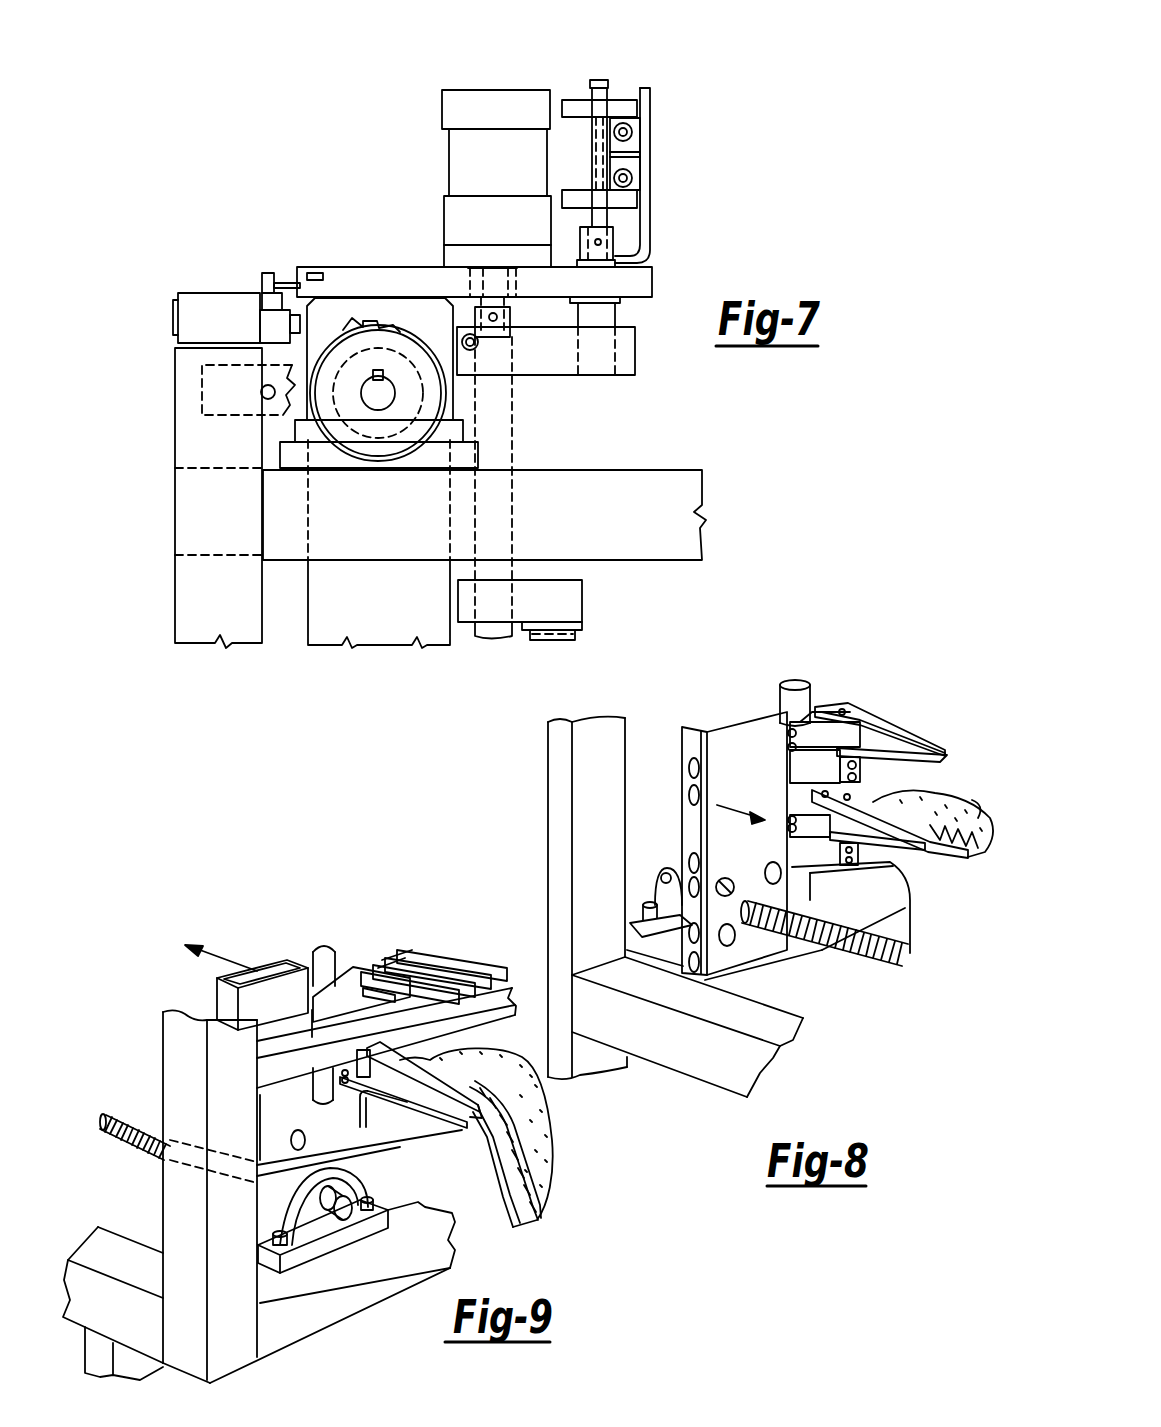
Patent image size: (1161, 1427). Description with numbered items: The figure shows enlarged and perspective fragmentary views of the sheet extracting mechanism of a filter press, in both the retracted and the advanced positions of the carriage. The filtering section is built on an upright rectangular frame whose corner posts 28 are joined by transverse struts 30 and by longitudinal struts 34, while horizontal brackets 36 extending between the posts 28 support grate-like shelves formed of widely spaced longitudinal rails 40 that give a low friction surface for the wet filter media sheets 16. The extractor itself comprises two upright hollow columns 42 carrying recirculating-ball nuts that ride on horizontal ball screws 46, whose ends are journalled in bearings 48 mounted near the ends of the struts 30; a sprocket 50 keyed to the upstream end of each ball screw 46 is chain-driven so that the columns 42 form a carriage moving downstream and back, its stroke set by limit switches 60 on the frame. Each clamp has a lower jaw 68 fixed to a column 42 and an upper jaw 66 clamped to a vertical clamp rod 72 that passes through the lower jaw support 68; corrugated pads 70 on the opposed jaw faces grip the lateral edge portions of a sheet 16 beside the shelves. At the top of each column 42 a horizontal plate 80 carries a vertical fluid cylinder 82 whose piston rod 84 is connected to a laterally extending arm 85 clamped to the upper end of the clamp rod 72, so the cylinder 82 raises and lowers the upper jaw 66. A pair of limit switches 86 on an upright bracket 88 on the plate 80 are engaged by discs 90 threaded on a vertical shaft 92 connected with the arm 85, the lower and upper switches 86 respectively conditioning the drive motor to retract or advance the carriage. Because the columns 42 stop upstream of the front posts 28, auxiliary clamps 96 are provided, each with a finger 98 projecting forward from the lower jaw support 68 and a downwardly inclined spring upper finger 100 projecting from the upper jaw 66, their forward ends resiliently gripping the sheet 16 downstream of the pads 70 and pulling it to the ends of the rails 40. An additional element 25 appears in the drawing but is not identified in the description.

In FIG. 8, the filter media sheet 16 is at (950, 850).
In FIG. 8, the cloth workpiece 25 is at (980, 807).
In FIG. 9, the cloth workpiece 25 is at (552, 1167).
In FIG. 8, the corner post 28 is at (548, 775).
In FIG. 9, the corner post 28 is at (237, 1360).
In FIG. 7, the transverse strut 30 is at (620, 478).
In FIG. 9, the transverse strut 30 is at (337, 1310).
In FIG. 8, the longitudinal strut 34 is at (713, 1068).
In FIG. 9, the longitudinal strut 34 is at (118, 1257).
In FIG. 9, the bracket 36 is at (483, 1013).
In FIG. 9, the rail 40 is at (447, 970).
In FIG. 7, the upright hollow column 42 is at (380, 633).
In FIG. 8, the upright hollow column 42 is at (723, 742).
In FIG. 9, the upright hollow column 42 is at (268, 960).
In FIG. 7, the ball screw 46 is at (387, 402).
In FIG. 8, the ball screw 46 is at (880, 933).
In FIG. 9, the ball screw 46 is at (120, 1117).
In FIG. 7, the bearing 48 is at (313, 432).
In FIG. 8, the bearing 48 is at (665, 870).
In FIG. 9, the bearing 48 is at (335, 1233).
In FIG. 7, the sprocket 50 is at (417, 343).
In FIG. 7, the limit switch 60 is at (277, 278).
In FIG. 7, the upper jaw 66 is at (575, 602).
In FIG. 8, the upper jaw 66 is at (810, 738).
In FIG. 9, the upper jaw 66 is at (353, 972).
In FIG. 8, the lower jaw 68 is at (795, 790).
In FIG. 9, the lower jaw 68 is at (327, 1118).
In FIG. 7, the pad 70 is at (565, 653).
In FIG. 7, the clamp rod 72 is at (497, 450).
In FIG. 8, the clamp rod 72 is at (808, 695).
In FIG. 9, the clamp rod 72 is at (337, 957).
In FIG. 7, the plate 80 is at (370, 273).
In FIG. 7, the fluid cylinder 82 is at (458, 147).
In FIG. 7, the piston rod 84 is at (488, 282).
In FIG. 7, the laterally extending arm 85 is at (570, 372).
In FIG. 7, the limit switch 86 is at (630, 128).
In FIG. 7, the upright bracket 88 is at (647, 233).
In FIG. 7, the disc 90 is at (572, 98).
In FIG. 7, the vertical shaft 92 is at (608, 87).
In FIG. 8, the auxiliary clamp 96 is at (927, 733).
In FIG. 8, the finger 98 is at (903, 773).
In FIG. 8, the upper finger 100 is at (880, 725).